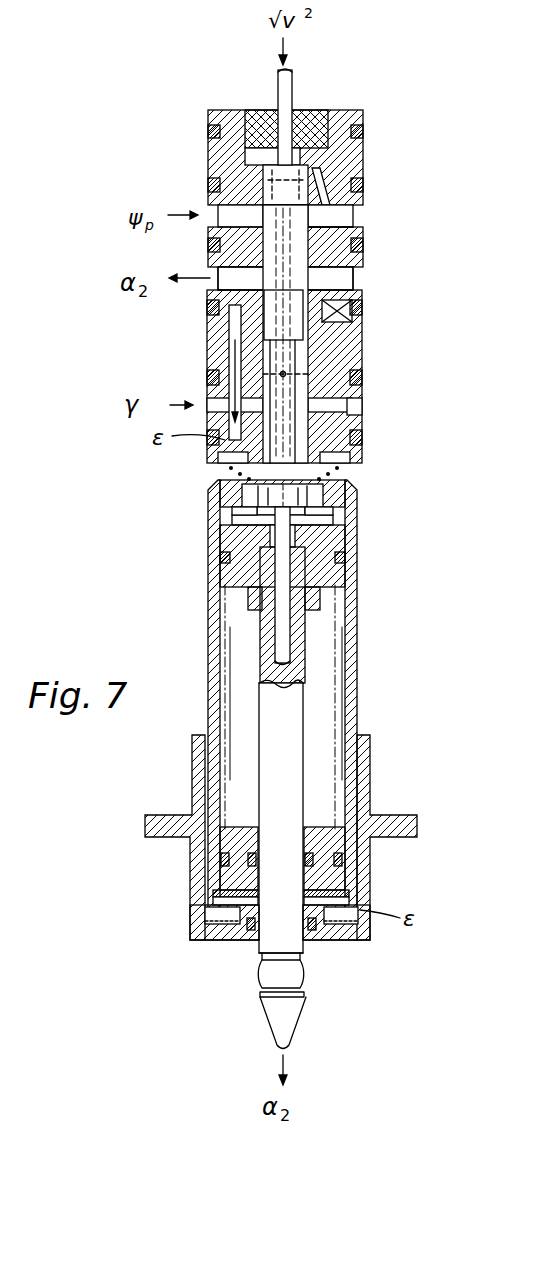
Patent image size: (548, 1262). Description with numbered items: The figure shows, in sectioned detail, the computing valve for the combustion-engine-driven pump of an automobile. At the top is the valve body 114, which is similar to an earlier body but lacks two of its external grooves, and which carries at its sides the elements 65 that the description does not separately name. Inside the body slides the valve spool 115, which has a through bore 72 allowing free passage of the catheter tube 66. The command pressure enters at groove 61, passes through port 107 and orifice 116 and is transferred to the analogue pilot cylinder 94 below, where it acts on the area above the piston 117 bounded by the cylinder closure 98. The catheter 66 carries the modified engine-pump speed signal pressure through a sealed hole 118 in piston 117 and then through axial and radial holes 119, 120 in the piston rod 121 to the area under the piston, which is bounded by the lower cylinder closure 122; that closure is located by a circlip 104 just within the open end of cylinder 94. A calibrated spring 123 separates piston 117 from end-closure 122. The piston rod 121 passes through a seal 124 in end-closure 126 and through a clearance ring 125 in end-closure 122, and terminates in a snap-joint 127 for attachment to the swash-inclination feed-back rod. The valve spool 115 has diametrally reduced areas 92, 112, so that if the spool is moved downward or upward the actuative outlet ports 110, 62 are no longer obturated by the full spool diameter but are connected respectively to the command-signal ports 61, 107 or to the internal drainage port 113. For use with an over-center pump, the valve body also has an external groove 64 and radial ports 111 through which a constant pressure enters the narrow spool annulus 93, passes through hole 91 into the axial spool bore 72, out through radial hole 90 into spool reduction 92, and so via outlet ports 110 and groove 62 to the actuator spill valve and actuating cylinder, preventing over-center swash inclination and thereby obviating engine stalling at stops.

The groove 61 is at (345, 208).
The groove 62 is at (355, 278).
The external groove 64 is at (355, 408).
The O-ring seals 65 is at (212, 130).
The catheter tube 66 is at (288, 70).
The through bore 72 is at (265, 250).
The radial hole 90 is at (330, 230).
The hole 91 is at (290, 374).
The diametrally reduced area 92 is at (318, 252).
The narrow spool annulus 93 is at (310, 378).
The analogue pilot cylinder 94 is at (214, 535).
The cylinder closure 98 is at (340, 495).
The circlip 104 is at (212, 900).
The port 107 is at (338, 218).
The actuative outlet port 110 is at (340, 282).
The radial ports 111 is at (358, 440).
The diametrally reduced area 112 is at (330, 325).
The internal drainage port 113 is at (250, 317).
The valve body 114 is at (343, 118).
The valve spool 115 is at (265, 180).
The orifice 116 is at (320, 185).
The piston 117 is at (330, 570).
The sealed hole 118 is at (300, 520).
The axial hole 119 is at (280, 615).
The radial hole 120 is at (261, 655).
The piston rod 121 is at (290, 700).
The lower cylinder closure 122 is at (371, 845).
The calibrated spring 123 is at (337, 625).
The seal 124 is at (320, 870).
The clearance ring 125 is at (318, 940).
The end-closure 126 is at (215, 935).
The snap-joint 127 is at (262, 975).